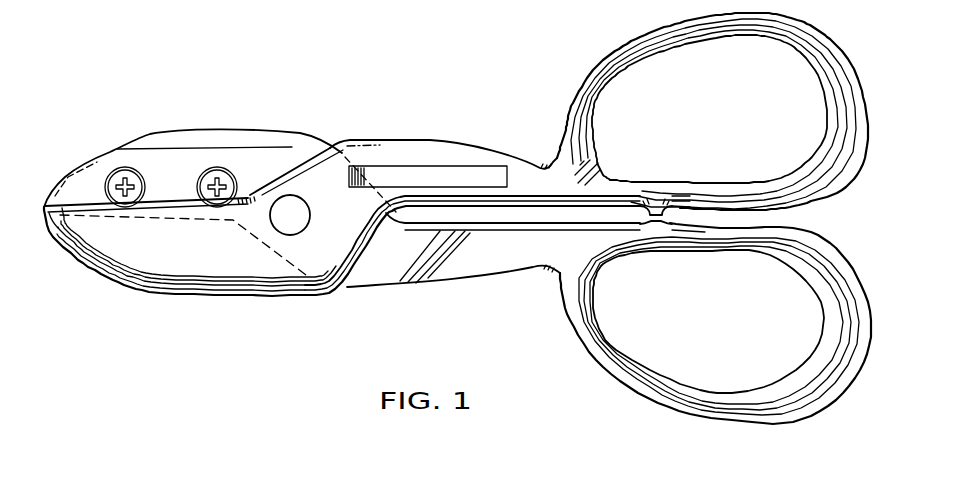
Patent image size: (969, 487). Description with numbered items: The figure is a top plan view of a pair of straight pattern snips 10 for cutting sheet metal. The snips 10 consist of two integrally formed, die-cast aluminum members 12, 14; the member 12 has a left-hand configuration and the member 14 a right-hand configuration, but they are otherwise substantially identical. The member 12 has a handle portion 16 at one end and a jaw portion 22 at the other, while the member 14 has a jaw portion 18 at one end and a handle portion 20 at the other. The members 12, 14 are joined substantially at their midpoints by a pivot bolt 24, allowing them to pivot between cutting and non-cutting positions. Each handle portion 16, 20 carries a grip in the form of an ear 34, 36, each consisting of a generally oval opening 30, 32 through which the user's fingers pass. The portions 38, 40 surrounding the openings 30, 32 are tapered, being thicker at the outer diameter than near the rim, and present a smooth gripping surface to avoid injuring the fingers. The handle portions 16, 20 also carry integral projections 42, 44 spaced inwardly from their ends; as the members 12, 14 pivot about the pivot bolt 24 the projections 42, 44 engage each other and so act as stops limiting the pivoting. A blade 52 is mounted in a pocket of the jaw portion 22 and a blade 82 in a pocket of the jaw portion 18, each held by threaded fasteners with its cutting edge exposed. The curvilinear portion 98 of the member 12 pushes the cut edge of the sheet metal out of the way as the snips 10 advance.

The straight pattern snips 10 is at (327, 120).
The member 12 is at (450, 130).
The member 14 is at (445, 292).
The handle portion 16 is at (597, 55).
The jaw portion 18 is at (208, 120).
The handle portion 20 is at (698, 422).
The jaw portion 22 is at (220, 303).
The pivot bolt 24 is at (302, 218).
The oval opening 30 is at (741, 181).
The oval opening 32 is at (729, 382).
The ear 34 is at (836, 45).
The ear 36 is at (860, 291).
The portion surrounding the opening 38 is at (826, 116).
The portion surrounding the opening 40 is at (823, 292).
The projection 42 is at (658, 208).
The projection 44 is at (657, 222).
The blade 52 is at (58, 229).
The blade 82 is at (53, 187).
The curvilinear portion 98 is at (280, 168).